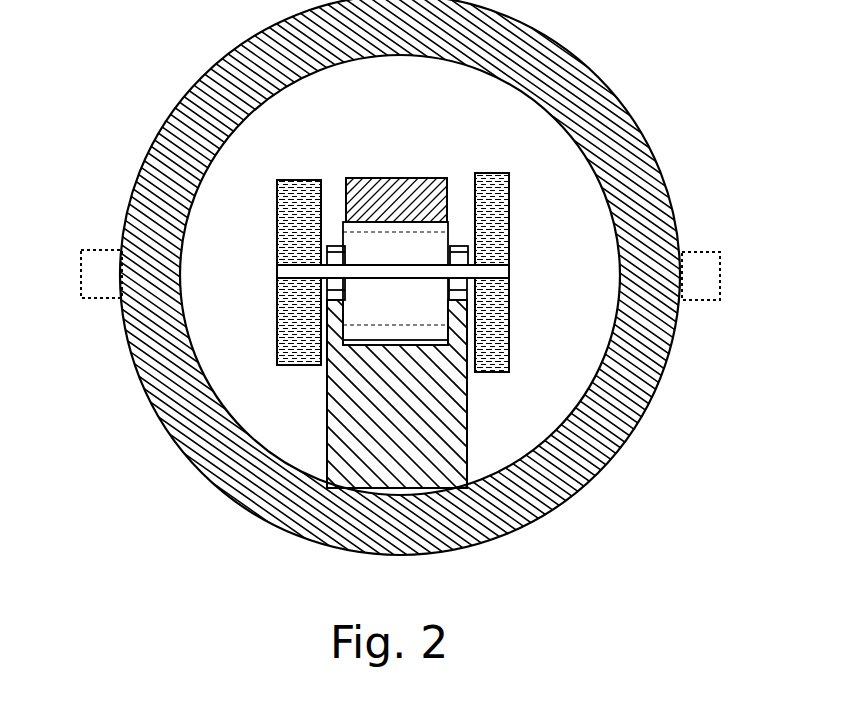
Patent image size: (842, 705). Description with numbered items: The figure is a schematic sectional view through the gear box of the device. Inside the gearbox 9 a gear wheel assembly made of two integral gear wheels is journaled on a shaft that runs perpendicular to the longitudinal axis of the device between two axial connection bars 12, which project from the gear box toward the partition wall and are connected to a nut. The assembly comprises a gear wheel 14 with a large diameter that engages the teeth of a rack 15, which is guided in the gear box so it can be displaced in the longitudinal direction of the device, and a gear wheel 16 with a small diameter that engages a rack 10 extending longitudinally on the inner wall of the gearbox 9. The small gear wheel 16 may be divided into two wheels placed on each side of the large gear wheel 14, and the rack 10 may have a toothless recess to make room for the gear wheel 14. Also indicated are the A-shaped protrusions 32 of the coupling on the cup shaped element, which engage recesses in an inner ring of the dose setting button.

The gearbox 9 is at (570, 495).
The rack 10 is at (332, 300).
The axial connection bars 12 is at (500, 238).
The gear wheel with a large diameter 14 is at (393, 330).
The rack 15 is at (367, 183).
The gear wheel with a small diameter 16 is at (503, 173).
The A-shaped protrusions 32 is at (93, 258).